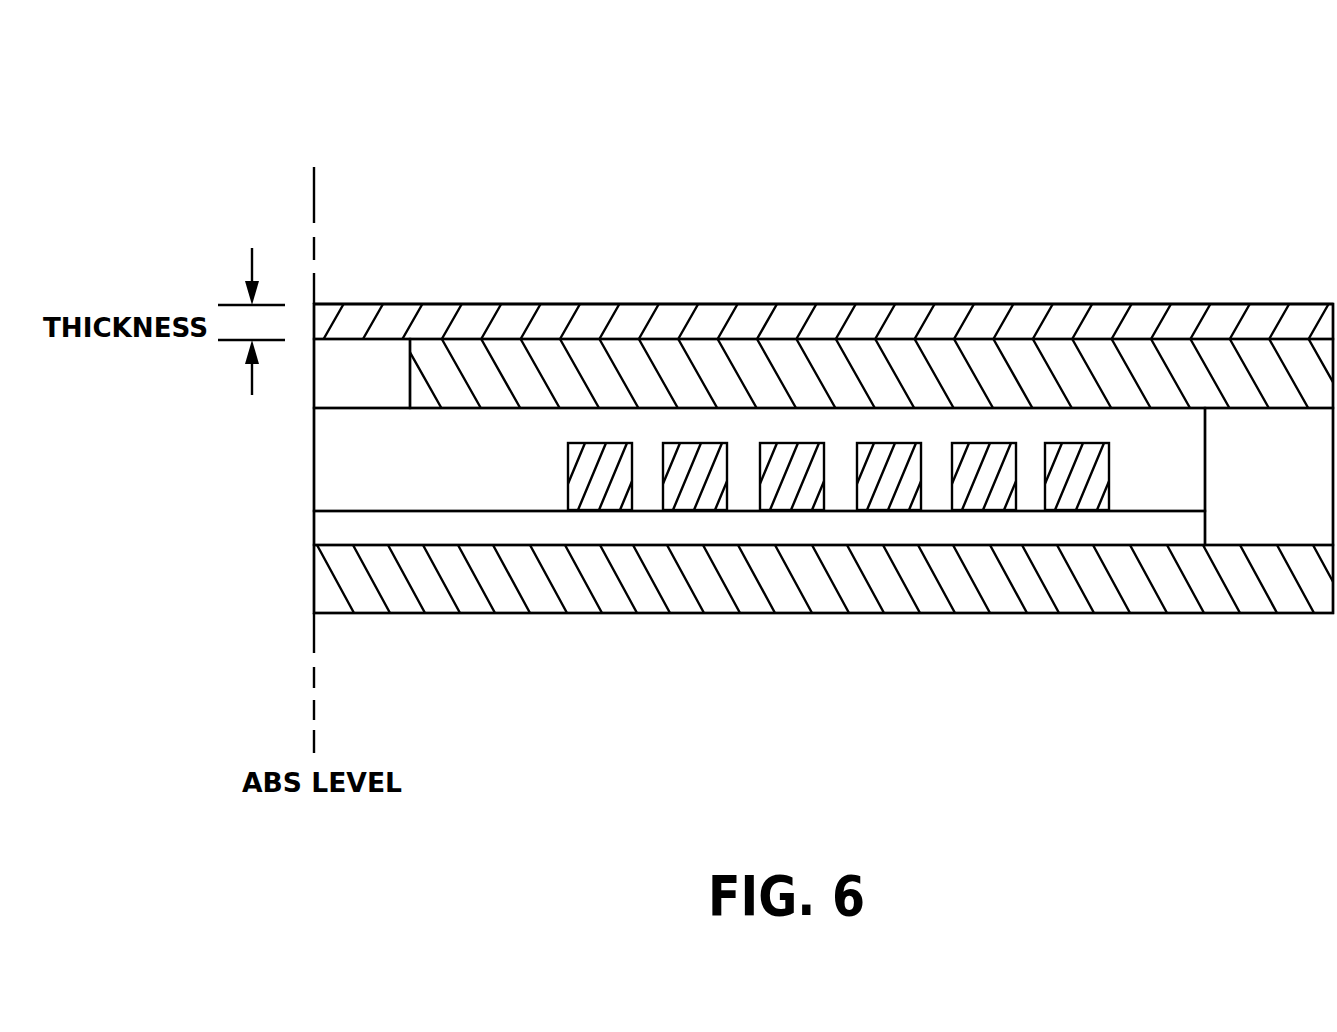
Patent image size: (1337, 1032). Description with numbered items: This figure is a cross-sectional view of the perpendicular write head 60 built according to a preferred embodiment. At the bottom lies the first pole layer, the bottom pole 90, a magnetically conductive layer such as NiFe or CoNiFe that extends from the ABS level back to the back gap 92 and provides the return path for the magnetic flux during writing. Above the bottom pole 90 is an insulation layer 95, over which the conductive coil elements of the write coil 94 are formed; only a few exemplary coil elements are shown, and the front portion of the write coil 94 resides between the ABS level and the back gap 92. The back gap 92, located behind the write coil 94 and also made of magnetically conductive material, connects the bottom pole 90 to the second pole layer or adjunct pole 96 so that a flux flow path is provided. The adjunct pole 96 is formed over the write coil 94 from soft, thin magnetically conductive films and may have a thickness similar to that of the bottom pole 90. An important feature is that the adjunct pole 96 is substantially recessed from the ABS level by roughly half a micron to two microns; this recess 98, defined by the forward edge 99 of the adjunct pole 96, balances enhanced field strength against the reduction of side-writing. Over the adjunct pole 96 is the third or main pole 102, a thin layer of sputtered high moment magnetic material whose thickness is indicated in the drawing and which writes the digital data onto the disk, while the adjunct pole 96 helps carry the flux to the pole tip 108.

The perpendicular write head 60 is at (782, 78).
The pole tip 108 is at (355, 305).
The main pole 102 is at (932, 302).
The adjunct pole 96 is at (873, 377).
The recess 98 is at (380, 386).
The forward edge 99 is at (759, 459).
The write coil 94 is at (793, 477).
The back gap 92 is at (1285, 484).
The insulation layer 95 is at (668, 527).
The bottom pole P1 90 is at (720, 615).